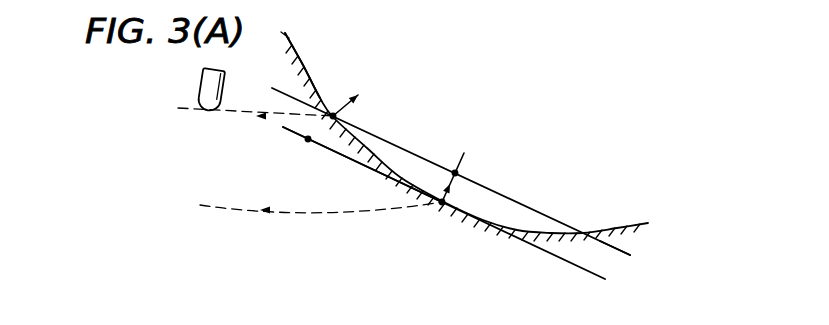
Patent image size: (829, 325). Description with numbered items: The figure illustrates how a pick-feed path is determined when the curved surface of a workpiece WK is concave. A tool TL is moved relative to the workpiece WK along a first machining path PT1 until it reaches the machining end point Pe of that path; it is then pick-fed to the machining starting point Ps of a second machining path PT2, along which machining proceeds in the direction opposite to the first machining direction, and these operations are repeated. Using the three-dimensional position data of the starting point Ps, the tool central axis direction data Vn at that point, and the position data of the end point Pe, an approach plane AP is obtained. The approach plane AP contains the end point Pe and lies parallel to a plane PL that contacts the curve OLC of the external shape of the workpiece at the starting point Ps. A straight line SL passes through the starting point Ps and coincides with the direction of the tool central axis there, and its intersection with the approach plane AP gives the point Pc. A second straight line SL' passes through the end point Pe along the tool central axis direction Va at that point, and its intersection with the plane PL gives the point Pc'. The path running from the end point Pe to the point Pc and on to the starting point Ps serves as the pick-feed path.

The tool TL is at (202, 90).
The curve of the external shape of the workpiece OLC is at (290, 45).
The workpiece WK is at (628, 221).
The straight line SL is at (451, 171).
The straight line SL' is at (362, 164).
The plane PL is at (576, 268).
The approach plane AP is at (618, 252).
The first machining path PT1 is at (243, 119).
The second machining path PT2 is at (347, 214).
The machining end point Pe is at (401, 113).
The point of intersection Pc is at (542, 130).
The point of intersection Pc' is at (310, 152).
The machining starting point Ps is at (440, 205).
The tool central axis direction data Va is at (368, 72).
The normal vector Vn(in,jn,kn) Vn is at (450, 190).